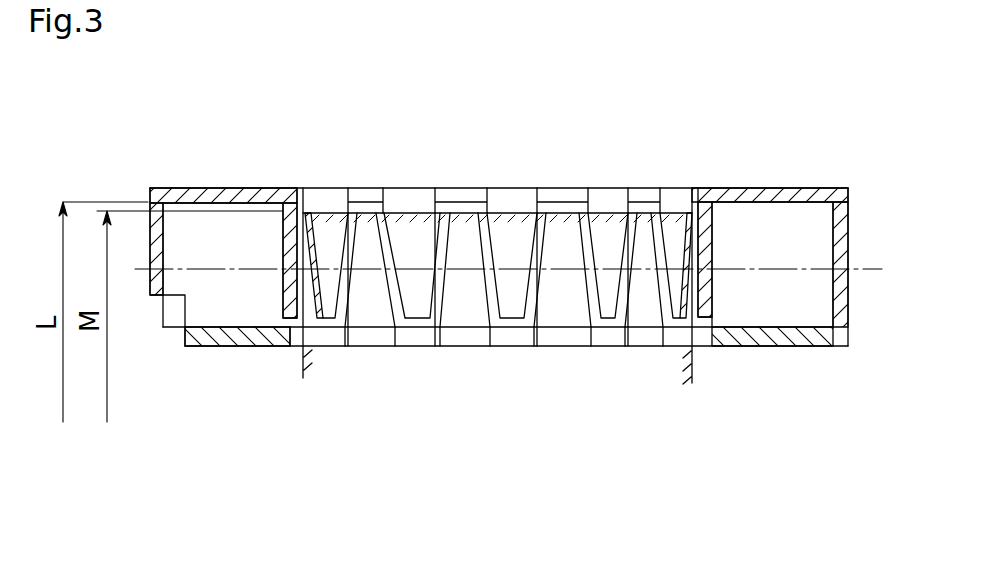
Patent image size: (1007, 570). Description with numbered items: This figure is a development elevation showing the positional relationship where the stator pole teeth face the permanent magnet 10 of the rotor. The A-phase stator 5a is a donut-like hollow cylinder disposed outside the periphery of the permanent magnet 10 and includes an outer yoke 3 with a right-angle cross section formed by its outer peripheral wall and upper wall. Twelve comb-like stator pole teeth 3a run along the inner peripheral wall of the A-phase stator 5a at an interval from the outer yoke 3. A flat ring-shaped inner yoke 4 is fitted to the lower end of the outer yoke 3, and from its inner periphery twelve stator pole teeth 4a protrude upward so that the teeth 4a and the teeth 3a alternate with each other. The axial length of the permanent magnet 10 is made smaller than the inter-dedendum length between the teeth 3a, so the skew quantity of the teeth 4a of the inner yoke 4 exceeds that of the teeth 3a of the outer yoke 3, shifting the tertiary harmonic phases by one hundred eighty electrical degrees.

The outer yoke 3 is at (848, 220).
The stator pole teeth 3a is at (287, 250).
The inner yoke 4 is at (773, 343).
The stator pole teeth 4a is at (562, 328).
The A-phase stator 5a is at (787, 177).
The permanent magnet 10 is at (347, 353).